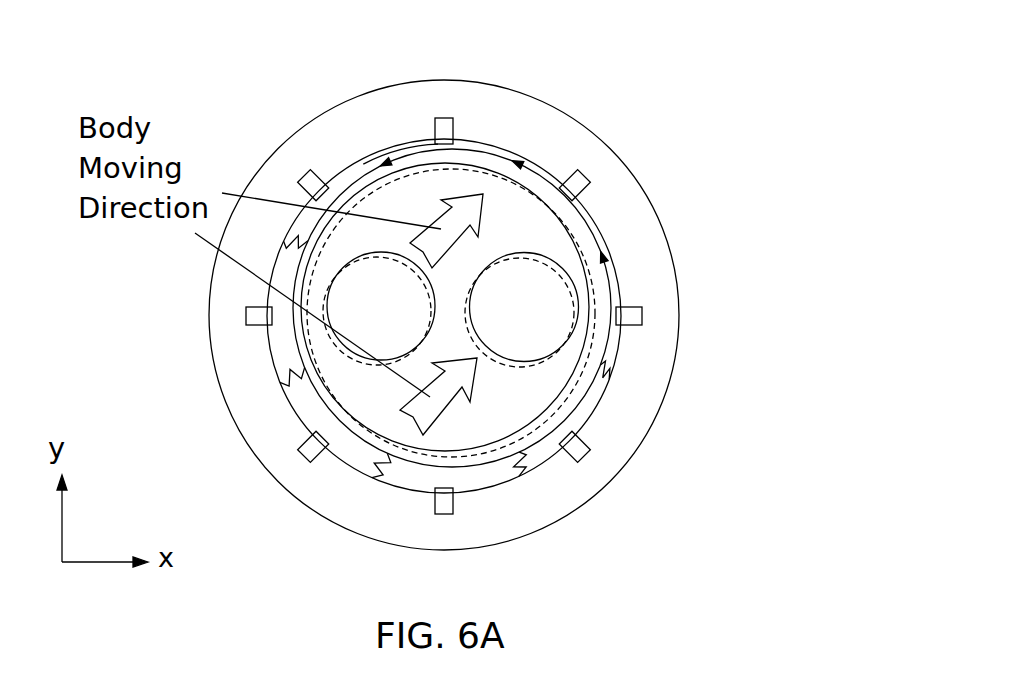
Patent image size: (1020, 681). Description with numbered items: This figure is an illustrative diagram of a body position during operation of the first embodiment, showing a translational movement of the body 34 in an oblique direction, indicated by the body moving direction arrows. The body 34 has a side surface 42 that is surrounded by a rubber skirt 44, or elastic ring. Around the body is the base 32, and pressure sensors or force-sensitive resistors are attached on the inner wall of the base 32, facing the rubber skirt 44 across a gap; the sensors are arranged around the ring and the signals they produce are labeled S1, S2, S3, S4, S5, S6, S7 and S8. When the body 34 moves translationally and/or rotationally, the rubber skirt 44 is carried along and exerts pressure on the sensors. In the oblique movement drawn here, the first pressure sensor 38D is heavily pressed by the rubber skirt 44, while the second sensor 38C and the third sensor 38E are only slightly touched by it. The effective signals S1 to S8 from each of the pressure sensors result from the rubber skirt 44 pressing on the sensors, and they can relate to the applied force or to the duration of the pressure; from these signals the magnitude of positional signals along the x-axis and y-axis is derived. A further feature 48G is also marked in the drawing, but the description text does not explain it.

The base 32 is at (602, 472).
The body 34 is at (518, 418).
The second sensor 38C is at (452, 122).
The first pressure sensor 38D is at (577, 175).
The third sensor 38E is at (637, 322).
The side surface 42 is at (313, 352).
The rubber skirt 44 is at (583, 225).
The gap / break in strip 48G is at (372, 480).
The effective signal S1 is at (245, 319).
The effective signal S2 is at (303, 174).
The effective signal S3 is at (451, 116).
The effective signal S4 is at (594, 178).
The effective signal S5 is at (646, 319).
The effective signal S6 is at (593, 450).
The effective signal S7 is at (447, 519).
The effective signal S8 is at (304, 458).